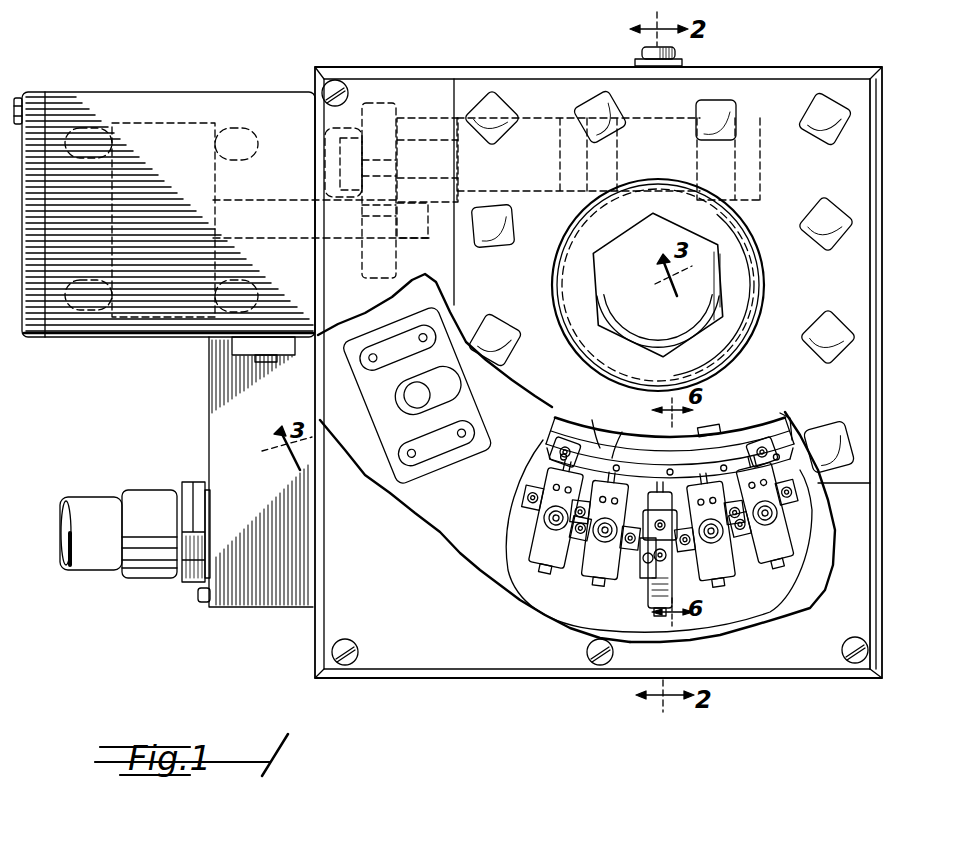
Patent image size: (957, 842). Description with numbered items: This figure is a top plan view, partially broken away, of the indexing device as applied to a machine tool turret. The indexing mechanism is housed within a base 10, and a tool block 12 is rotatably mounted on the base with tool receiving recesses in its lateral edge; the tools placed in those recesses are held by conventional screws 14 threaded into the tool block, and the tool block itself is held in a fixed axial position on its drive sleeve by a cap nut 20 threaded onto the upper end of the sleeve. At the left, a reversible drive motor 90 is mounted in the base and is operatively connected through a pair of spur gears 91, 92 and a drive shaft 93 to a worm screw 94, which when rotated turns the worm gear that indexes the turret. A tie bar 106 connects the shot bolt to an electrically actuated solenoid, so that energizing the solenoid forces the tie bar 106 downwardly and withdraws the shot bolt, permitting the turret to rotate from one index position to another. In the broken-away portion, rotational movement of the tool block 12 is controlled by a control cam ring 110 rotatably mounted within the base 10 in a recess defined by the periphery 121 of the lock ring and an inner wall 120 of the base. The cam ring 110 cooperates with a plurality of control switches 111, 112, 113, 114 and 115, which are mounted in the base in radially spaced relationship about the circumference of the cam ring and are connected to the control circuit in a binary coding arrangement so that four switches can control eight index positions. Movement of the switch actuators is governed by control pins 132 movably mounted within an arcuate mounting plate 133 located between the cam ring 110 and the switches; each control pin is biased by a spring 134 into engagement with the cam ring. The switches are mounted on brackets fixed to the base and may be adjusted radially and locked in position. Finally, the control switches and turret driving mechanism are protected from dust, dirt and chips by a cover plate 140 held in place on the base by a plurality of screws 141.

The base 10 is at (895, 526).
The tool block 12 is at (855, 288).
The screws 14 is at (810, 126).
The cap nut 20 is at (755, 254).
The reversible drive motor 90 is at (197, 125).
The spur gear 91 is at (365, 260).
The spur gear 92 is at (392, 116).
The drive shaft 93 is at (418, 150).
The worm screw 94 is at (645, 128).
The tie bar 106 is at (470, 373).
The control cam ring 110 is at (745, 430).
The control switch 111 is at (548, 488).
The control switch 112 is at (604, 529).
The control switch 113 is at (660, 492).
The control switch 114 is at (716, 540).
The control switch 115 is at (786, 470).
The inner wall 120 is at (788, 426).
The periphery of the lock ring 121 is at (712, 438).
The control pins 132 is at (592, 420).
The arcuate mounting plate 133 is at (622, 432).
The spring 134 is at (553, 458).
The cover plate 140 is at (862, 610).
The screws 141 is at (352, 648).